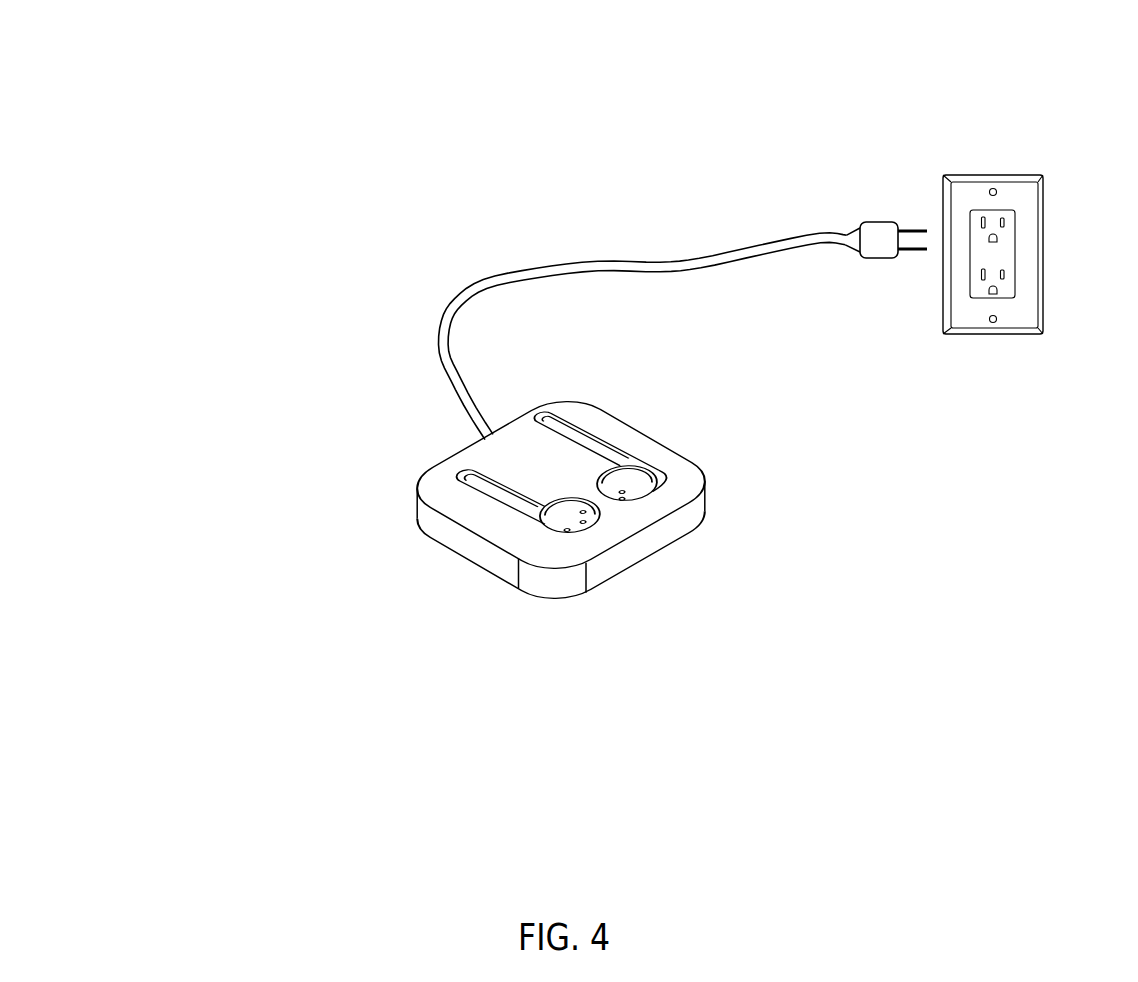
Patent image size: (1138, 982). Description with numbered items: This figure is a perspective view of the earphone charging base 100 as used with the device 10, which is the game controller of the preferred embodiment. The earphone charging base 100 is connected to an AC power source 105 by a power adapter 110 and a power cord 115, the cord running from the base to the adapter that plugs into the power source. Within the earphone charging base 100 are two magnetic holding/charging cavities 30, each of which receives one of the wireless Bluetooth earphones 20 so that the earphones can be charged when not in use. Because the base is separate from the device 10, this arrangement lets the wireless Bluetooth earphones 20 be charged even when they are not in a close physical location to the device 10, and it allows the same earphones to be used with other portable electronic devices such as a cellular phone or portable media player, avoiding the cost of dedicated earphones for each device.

The device 10 is at (243, 194).
The wireless Bluetooth earphones 20 is at (653, 487).
The magnetic holding/charging cavities 30 is at (455, 477).
The earphone charging base 100 is at (688, 470).
The AC power source 105 is at (1020, 208).
The power adapter 110 is at (873, 232).
The power cord 115 is at (693, 263).